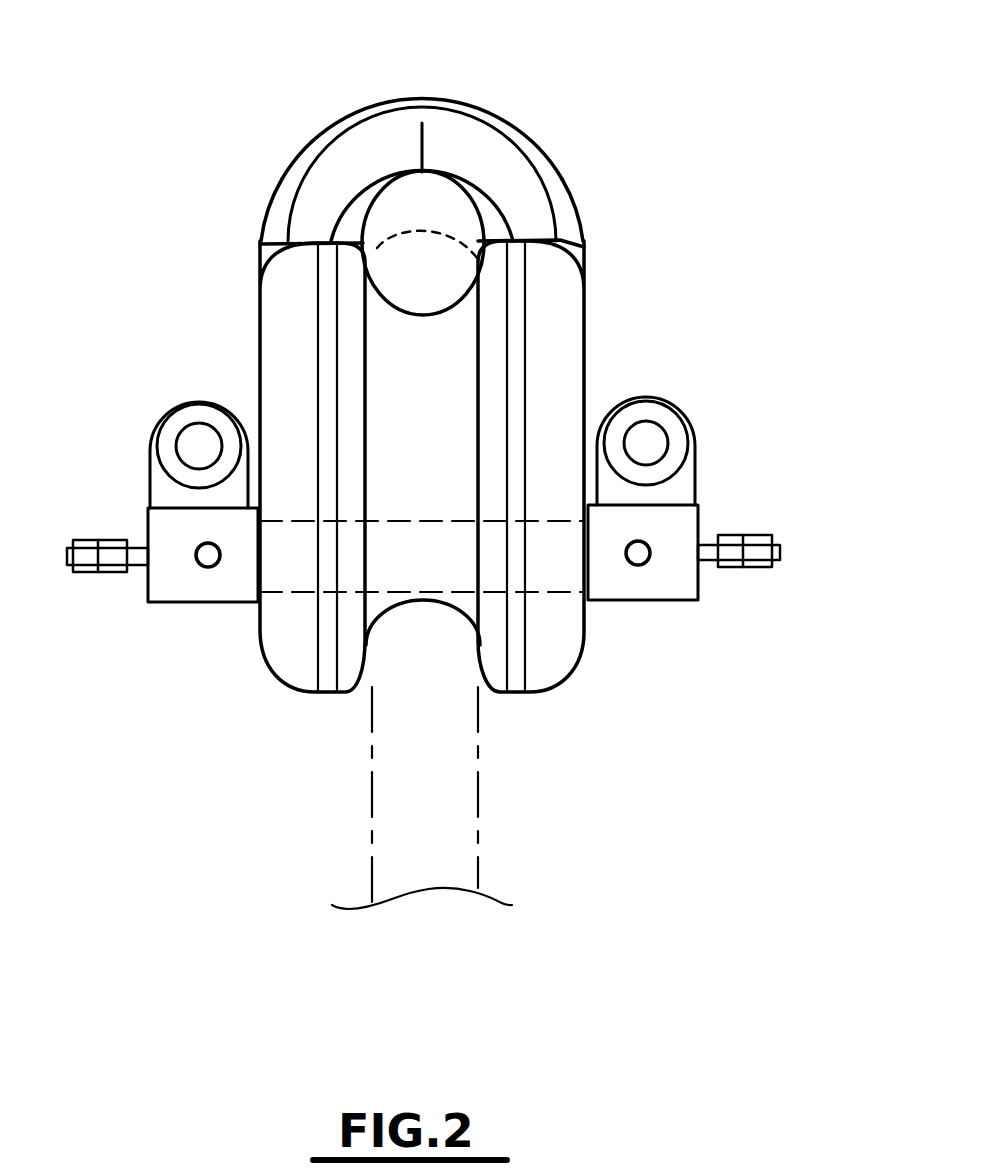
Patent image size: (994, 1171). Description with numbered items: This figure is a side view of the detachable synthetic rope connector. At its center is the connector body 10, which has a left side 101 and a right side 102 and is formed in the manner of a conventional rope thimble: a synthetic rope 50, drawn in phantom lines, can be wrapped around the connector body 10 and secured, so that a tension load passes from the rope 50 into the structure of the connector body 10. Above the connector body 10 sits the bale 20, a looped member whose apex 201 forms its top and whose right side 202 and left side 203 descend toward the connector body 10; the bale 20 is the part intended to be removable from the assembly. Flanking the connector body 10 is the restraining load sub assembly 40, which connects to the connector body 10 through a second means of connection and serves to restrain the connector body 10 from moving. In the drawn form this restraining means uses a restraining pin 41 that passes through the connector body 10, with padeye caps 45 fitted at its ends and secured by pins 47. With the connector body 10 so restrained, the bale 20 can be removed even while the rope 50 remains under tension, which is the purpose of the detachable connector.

The connector body 10 is at (548, 364).
The left side 101 is at (250, 348).
The right side 102 is at (585, 388).
The bale 20 is at (520, 190).
The apex 201 is at (429, 82).
The right side 202 is at (590, 213).
The left side 203 is at (273, 187).
The restraining load sub assembly 40 is at (713, 585).
The restraining pin 41 is at (547, 593).
The padeye caps 45 is at (697, 452).
The pins 47 is at (653, 543).
The synthetic rope 50 is at (480, 827).